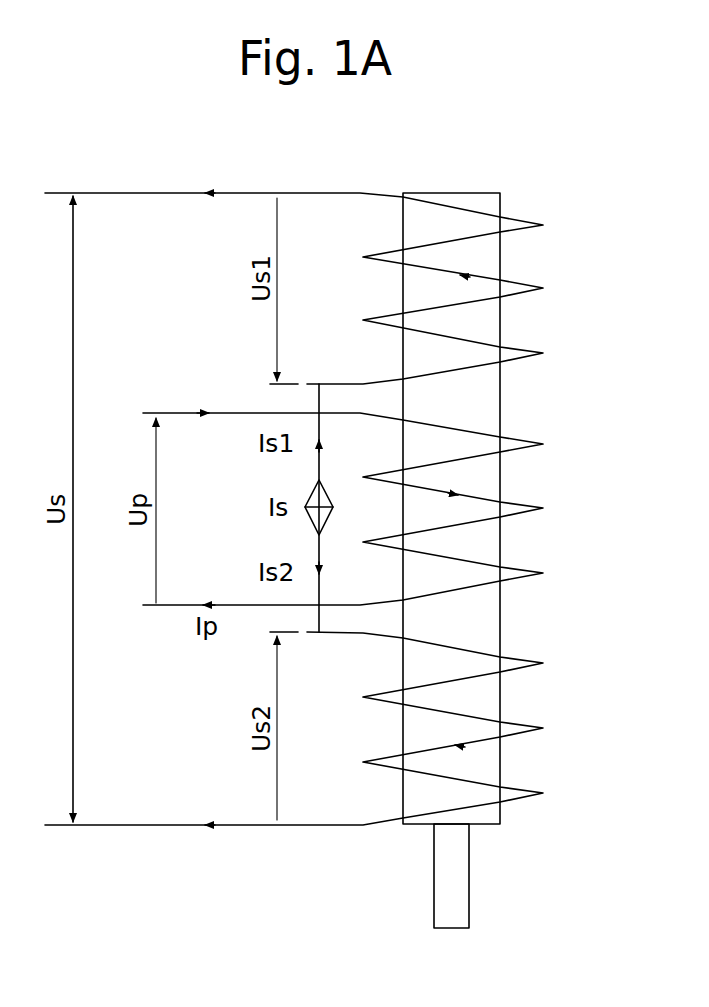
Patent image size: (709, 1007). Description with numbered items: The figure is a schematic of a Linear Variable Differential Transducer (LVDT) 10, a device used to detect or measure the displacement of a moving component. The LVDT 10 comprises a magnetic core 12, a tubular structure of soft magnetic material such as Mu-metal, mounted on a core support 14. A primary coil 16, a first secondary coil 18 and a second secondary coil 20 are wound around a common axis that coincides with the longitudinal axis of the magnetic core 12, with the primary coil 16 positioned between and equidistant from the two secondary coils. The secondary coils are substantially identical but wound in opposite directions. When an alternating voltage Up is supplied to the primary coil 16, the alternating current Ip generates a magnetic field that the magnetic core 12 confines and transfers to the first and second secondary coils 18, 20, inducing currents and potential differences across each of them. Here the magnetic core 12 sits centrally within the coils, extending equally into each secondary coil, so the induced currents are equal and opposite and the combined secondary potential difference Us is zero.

The Linear Variable Differential Transducer (LVDT) 10 is at (490, 156).
The magnetic core 12 is at (503, 198).
The core support 14 is at (469, 885).
The primary coil 16 is at (520, 440).
The first secondary coil 18 is at (523, 283).
The second secondary coil 20 is at (523, 662).